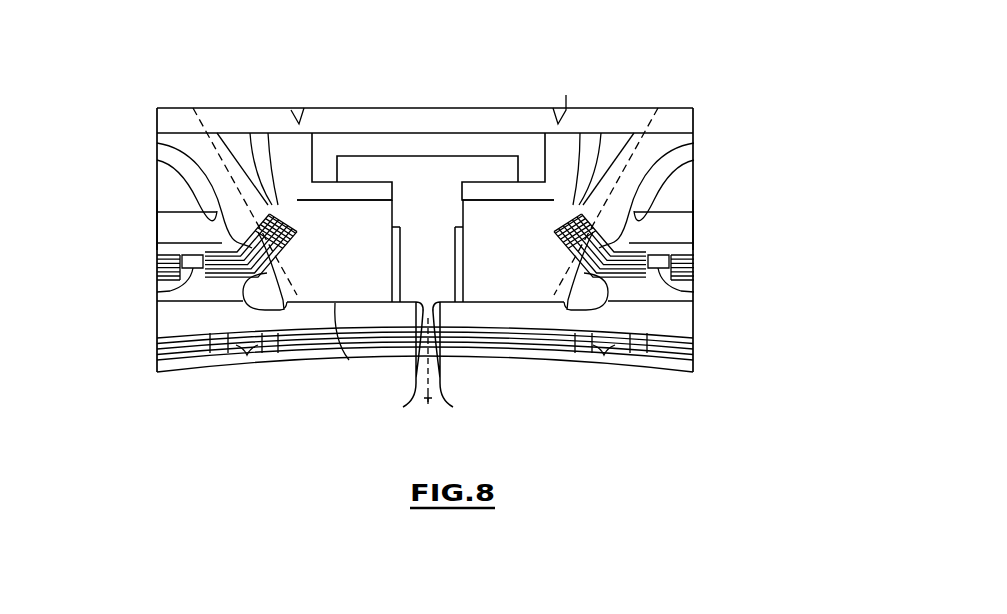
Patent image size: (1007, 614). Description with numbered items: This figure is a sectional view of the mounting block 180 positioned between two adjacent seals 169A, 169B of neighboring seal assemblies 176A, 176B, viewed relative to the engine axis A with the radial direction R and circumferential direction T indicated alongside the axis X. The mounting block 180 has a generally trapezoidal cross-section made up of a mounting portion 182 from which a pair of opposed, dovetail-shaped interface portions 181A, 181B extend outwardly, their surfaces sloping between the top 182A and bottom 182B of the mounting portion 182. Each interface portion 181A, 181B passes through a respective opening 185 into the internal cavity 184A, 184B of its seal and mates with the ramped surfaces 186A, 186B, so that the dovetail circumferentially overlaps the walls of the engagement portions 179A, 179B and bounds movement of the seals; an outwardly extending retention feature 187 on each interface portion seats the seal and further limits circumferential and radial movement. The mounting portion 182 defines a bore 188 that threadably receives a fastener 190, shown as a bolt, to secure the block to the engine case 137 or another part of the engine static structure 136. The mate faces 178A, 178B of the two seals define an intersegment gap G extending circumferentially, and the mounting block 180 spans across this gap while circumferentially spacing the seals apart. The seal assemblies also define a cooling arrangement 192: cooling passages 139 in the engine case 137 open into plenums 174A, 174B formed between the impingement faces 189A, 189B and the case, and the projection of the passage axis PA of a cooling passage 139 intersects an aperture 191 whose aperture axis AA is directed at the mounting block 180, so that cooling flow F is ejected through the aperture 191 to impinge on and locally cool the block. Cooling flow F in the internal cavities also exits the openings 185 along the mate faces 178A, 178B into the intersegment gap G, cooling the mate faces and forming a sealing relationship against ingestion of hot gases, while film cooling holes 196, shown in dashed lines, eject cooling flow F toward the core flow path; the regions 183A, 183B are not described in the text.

The cooling arrangement 192 is at (115, 55).
The cooling passage 139 is at (157, 116).
The engine static structure 136 is at (323, 78).
The engine case 137 is at (280, 125).
The retention feature 187 is at (291, 110).
The ramped surface 186A is at (268, 133).
The ramped surface 186B is at (601, 133).
The engagement portion 179A is at (250, 133).
The engagement portion 179B is at (634, 133).
The mounting portion 182 is at (311, 133).
The top of mounting portion 182A is at (373, 197).
The bottom of mounting portion 182B is at (349, 360).
The mounting block 180 is at (534, 188).
The fastener 190 is at (462, 148).
The interface portion 181A is at (157, 143).
The interface portion 181B is at (693, 143).
The impingement face 189A is at (157, 160).
The impingement face 189B is at (693, 160).
The seal assembly 176A is at (149, 197).
The seal assembly 176B is at (702, 197).
The seal 169A is at (151, 239).
The seal 169B is at (700, 239).
The plenum 174A is at (214, 240).
The plenum 174B is at (683, 242).
The bore 188 is at (392, 212).
The opening 185 is at (400, 262).
The aperture 191 is at (168, 289).
The internal cavity 184A is at (156, 336).
The internal cavity 184B is at (688, 336).
The first mate face 183A is at (197, 372).
The second mate face 183B is at (557, 360).
The film cooling hole 196 is at (247, 355).
The mate face 178A is at (412, 401).
The mate face 178B is at (444, 395).
The passage axis PA is at (193, 125).
The aperture axis AA is at (289, 253).
The cooling flow F is at (210, 318).
The intersegment gap G is at (451, 370).
The engine axis A is at (432, 412).
The radial direction R is at (803, 213).
The circumferential direction T is at (803, 213).
The axial direction X is at (803, 216).